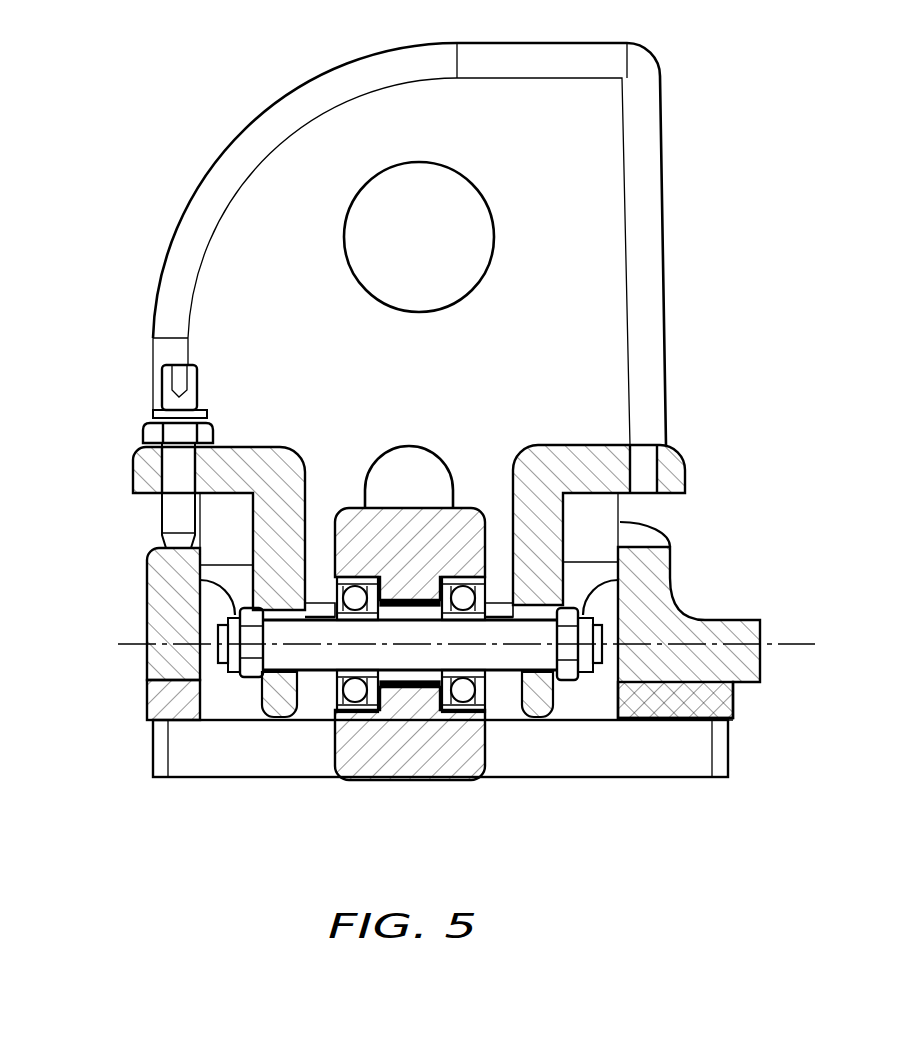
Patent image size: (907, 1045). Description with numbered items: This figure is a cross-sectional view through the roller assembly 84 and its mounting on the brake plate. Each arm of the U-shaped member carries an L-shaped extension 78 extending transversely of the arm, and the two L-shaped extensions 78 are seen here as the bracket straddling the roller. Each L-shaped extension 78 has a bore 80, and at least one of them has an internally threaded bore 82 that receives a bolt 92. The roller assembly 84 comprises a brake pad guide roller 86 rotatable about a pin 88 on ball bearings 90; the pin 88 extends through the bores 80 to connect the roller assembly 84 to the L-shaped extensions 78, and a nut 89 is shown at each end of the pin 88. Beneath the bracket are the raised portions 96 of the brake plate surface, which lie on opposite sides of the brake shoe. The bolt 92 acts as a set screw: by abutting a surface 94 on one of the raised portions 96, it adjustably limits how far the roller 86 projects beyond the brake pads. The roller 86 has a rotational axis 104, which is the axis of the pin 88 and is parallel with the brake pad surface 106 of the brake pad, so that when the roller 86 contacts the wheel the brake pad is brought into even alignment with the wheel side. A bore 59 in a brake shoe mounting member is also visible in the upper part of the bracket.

The bore 59 is at (435, 220).
The L-shaped extension 78 is at (243, 445).
The bore 80 is at (290, 662).
The bore 82 is at (178, 490).
The roller assembly 84 is at (390, 425).
The brake pad guide roller 86 is at (375, 782).
The pin 88 is at (423, 658).
The nut 89 is at (247, 680).
The ball bearings 90 is at (355, 598).
The bolt 92 is at (158, 380).
The surface 94 is at (148, 533).
The raised portions 96 is at (148, 590).
The rotational axis 104 is at (790, 642).
The brake pad surface 106 is at (660, 778).